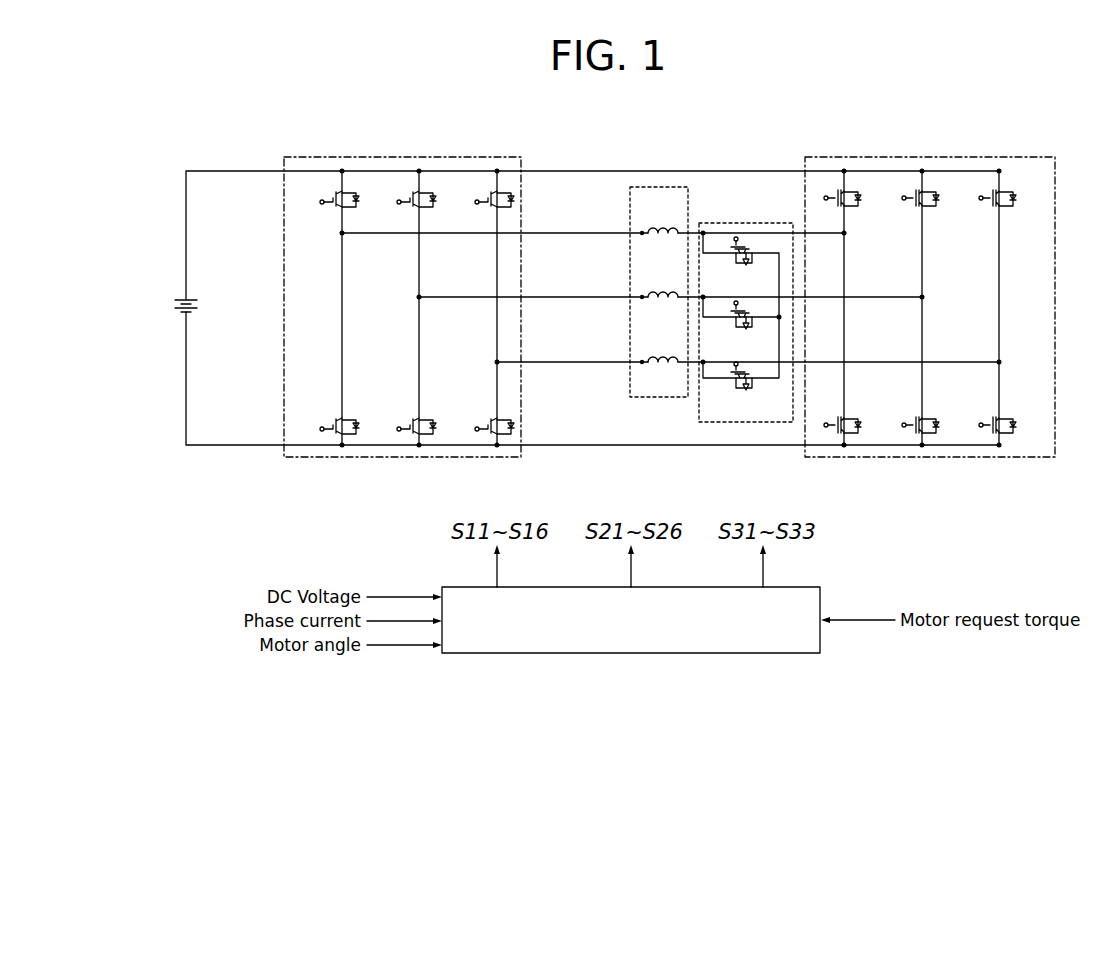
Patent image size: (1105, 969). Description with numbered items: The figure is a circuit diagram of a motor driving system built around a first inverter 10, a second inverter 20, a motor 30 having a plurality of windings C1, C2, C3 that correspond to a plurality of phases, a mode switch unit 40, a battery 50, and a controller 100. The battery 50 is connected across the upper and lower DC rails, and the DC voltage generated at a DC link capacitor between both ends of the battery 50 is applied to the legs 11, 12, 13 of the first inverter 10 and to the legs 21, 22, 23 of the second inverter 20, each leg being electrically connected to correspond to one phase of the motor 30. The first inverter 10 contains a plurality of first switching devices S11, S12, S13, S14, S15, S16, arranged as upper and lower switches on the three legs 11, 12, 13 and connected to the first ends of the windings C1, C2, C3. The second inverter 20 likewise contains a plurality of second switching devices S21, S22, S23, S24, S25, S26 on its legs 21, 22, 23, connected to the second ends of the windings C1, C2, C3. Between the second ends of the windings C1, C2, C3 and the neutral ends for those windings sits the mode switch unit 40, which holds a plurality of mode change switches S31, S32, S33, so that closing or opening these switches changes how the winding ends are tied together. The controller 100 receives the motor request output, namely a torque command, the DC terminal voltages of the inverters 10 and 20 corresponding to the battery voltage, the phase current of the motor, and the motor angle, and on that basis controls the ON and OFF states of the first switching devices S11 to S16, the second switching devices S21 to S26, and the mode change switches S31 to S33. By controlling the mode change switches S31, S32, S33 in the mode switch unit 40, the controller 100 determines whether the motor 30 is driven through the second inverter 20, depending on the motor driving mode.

The first inverter 10 is at (388, 157).
The second inverter 20 is at (925, 157).
The motor 30 is at (655, 187).
The mode switch unit 40 is at (738, 223).
The battery 50 is at (186, 300).
The controller 100 is at (821, 587).
The leg 11 is at (342, 447).
The leg 12 is at (419, 447).
The leg 13 is at (497, 447).
The leg 21 is at (844, 447).
The leg 22 is at (922, 447).
The leg 23 is at (999, 447).
The first switching device S11 is at (353, 210).
The first switching device S12 is at (354, 414).
The first switching device S13 is at (430, 210).
The first switching device S14 is at (431, 414).
The first switching device S15 is at (508, 210).
The first switching device S16 is at (508, 414).
The second switching device S21 is at (857, 210).
The second switching device S22 is at (857, 413).
The second switching device S23 is at (935, 210).
The second switching device S24 is at (935, 413).
The second switching device S25 is at (1012, 210).
The second switching device S26 is at (1012, 413).
The mode change switch S31 is at (741, 261).
The mode change switch S32 is at (741, 325).
The mode change switch S33 is at (741, 387).
The winding C1 is at (650, 233).
The winding C2 is at (650, 297).
The winding C3 is at (648, 364).